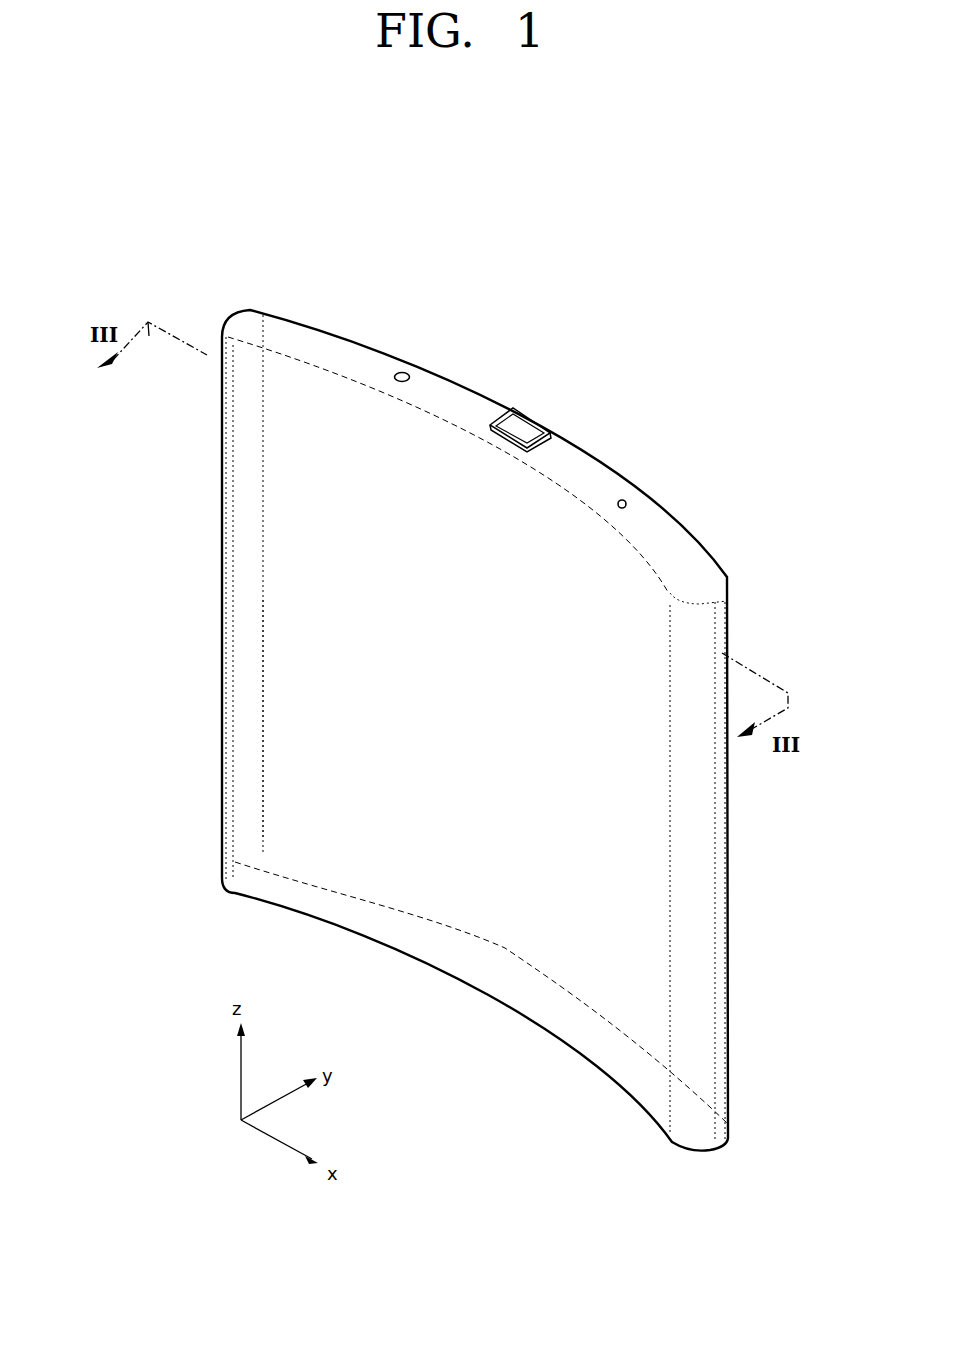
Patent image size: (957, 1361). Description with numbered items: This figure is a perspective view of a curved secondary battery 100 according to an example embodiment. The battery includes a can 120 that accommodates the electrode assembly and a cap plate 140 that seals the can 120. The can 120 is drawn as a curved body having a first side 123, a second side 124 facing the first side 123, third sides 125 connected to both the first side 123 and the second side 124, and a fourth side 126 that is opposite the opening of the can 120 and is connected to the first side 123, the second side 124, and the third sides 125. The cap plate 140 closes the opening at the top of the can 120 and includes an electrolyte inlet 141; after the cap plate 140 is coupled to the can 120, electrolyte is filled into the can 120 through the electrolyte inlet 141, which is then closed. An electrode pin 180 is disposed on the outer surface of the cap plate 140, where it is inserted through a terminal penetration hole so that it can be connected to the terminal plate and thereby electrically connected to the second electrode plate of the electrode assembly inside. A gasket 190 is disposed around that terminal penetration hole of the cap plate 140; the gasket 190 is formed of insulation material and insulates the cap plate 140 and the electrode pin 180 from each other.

The curved secondary battery 100 is at (702, 268).
The can 120 is at (730, 807).
The first side 123 is at (330, 737).
The second side 124 is at (327, 587).
The third sides 125 is at (722, 903).
The fourth side 126 is at (468, 957).
The cap plate 140 is at (705, 558).
The electrolyte inlet 141 is at (402, 372).
The electrode pin 180 is at (518, 422).
The gasket 190 is at (544, 431).